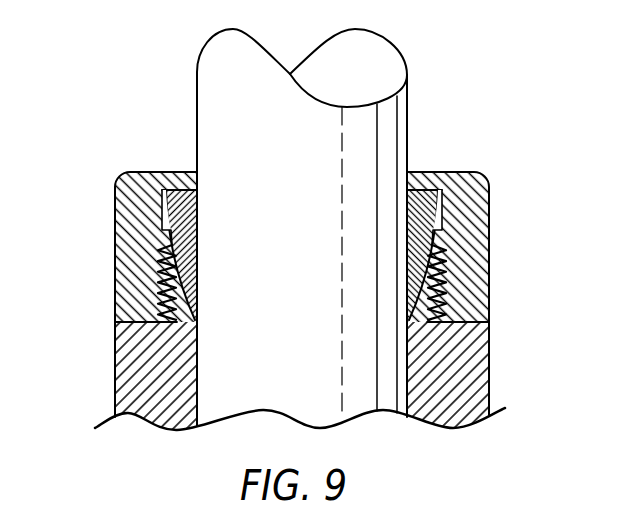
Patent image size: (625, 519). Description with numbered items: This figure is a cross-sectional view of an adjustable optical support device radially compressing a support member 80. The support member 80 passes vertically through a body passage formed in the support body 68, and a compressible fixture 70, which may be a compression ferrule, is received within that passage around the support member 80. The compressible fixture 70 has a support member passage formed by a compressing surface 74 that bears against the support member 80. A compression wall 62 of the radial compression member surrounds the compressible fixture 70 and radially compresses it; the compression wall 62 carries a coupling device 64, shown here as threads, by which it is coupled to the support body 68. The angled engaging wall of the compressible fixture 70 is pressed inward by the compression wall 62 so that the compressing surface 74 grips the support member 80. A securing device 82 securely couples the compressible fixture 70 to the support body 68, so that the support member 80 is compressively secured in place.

The compression wall 62 is at (428, 308).
The coupling device 64 is at (432, 289).
The support body 68 is at (488, 365).
The compressible fixture 70 is at (437, 223).
The compressing surface 74 is at (168, 224).
The support member 80 is at (407, 127).
The securing device 82 is at (478, 172).